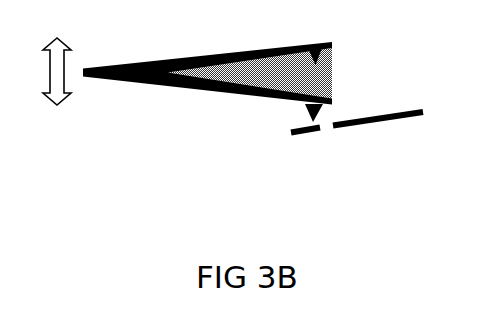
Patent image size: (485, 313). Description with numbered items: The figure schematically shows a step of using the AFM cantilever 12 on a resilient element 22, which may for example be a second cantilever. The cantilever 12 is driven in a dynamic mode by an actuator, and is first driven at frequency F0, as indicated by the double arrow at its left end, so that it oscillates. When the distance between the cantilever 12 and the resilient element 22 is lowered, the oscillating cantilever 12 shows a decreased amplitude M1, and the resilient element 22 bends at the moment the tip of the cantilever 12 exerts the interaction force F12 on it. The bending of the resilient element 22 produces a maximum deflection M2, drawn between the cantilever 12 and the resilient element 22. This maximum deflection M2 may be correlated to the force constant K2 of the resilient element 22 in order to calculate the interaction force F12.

The frequency F0 is at (57, 57).
The cantilever 12 is at (187, 101).
The decreased amplitude M1 is at (347, 47).
The maximum deflection M2 is at (282, 104).
The resilient element 22 is at (312, 149).
The force constant K2 is at (436, 150).
The interaction force F12 is at (328, 122).